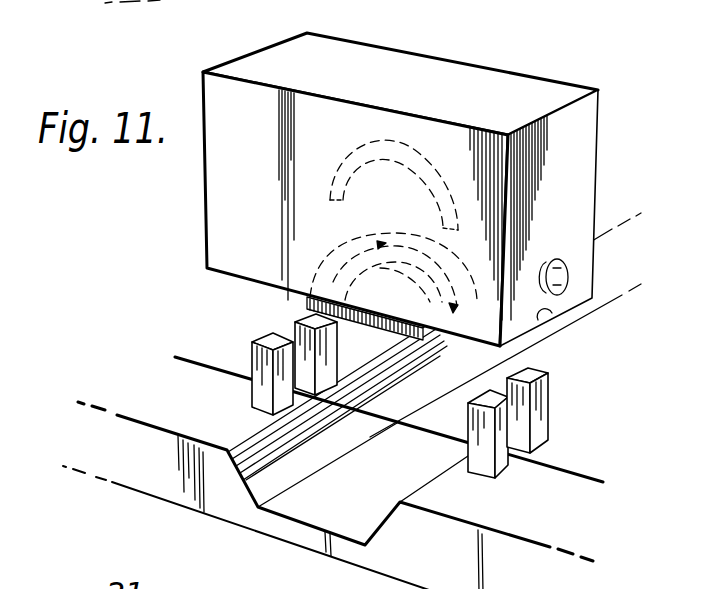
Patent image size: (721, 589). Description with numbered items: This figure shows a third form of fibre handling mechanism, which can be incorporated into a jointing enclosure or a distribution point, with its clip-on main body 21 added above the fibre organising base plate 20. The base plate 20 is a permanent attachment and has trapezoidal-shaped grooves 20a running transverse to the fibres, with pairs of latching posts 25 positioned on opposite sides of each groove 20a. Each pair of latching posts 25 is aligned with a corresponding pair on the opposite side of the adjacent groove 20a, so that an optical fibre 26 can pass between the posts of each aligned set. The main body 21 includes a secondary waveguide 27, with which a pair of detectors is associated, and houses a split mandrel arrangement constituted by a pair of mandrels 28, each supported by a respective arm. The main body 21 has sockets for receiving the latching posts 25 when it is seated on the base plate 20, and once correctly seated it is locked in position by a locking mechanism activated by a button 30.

The fibre organising base plate 20 is at (569, 523).
The transverse groove 20a is at (389, 499).
The main body 21 is at (492, 20).
The latching posts 25 is at (273, 340).
The optical fibre 26 is at (558, 466).
The secondary waveguide 27 is at (374, 147).
The mandrels 28 is at (336, 278).
The button 30 is at (558, 259).